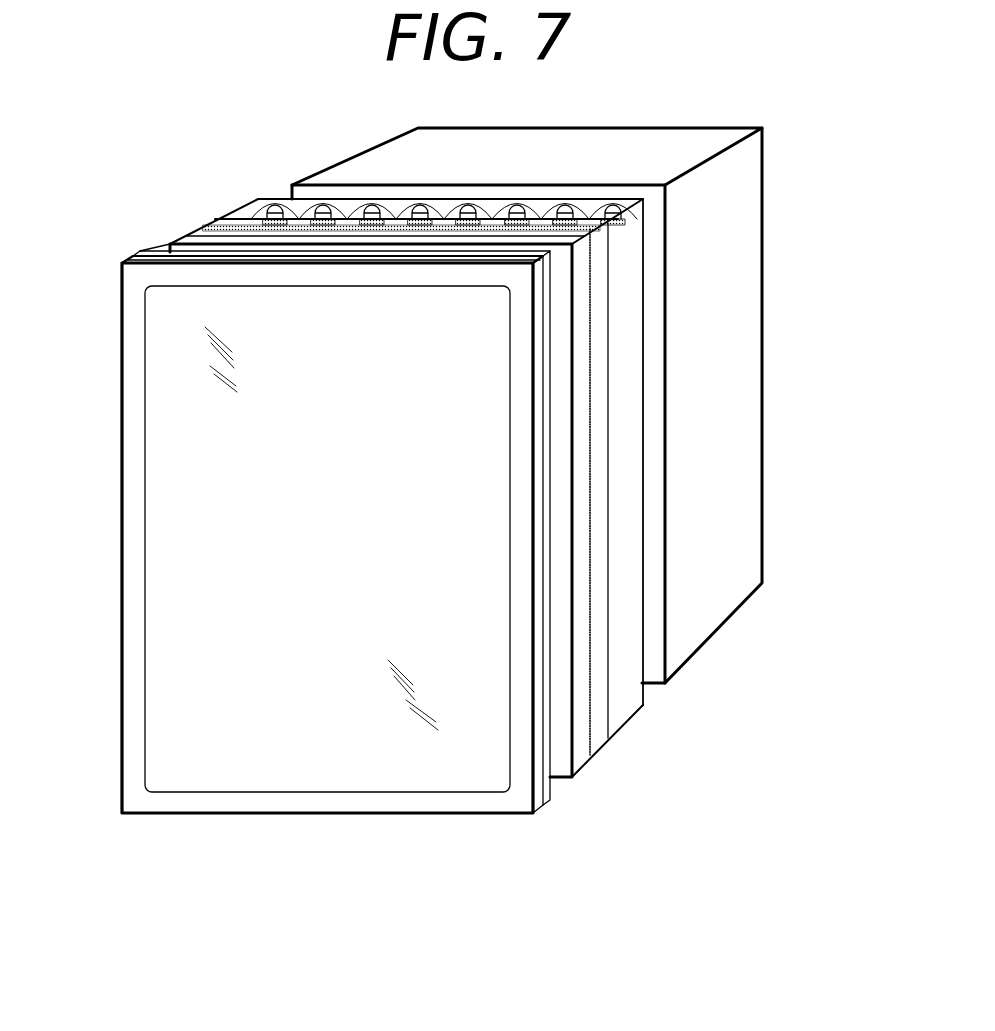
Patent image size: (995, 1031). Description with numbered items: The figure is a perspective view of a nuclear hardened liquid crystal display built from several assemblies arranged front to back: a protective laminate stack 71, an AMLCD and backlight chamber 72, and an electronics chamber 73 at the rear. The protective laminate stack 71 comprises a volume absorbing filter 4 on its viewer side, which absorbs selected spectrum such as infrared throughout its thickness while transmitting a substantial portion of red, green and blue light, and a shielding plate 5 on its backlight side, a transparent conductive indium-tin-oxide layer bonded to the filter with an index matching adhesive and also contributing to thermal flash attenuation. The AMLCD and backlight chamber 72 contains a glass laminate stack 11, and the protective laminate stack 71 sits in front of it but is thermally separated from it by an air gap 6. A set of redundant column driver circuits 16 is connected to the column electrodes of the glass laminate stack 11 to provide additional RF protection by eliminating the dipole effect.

The volume absorbing filter 4 is at (118, 263).
The shielding plate 5 is at (543, 805).
The air gap 6 is at (165, 237).
The glass laminate stack 11 is at (575, 792).
The redundant column driver circuits 16 is at (601, 216).
The protective laminate stack 71 is at (122, 823).
The AMLCD and backlight chamber 72 is at (170, 232).
The electronics chamber 73 is at (728, 322).